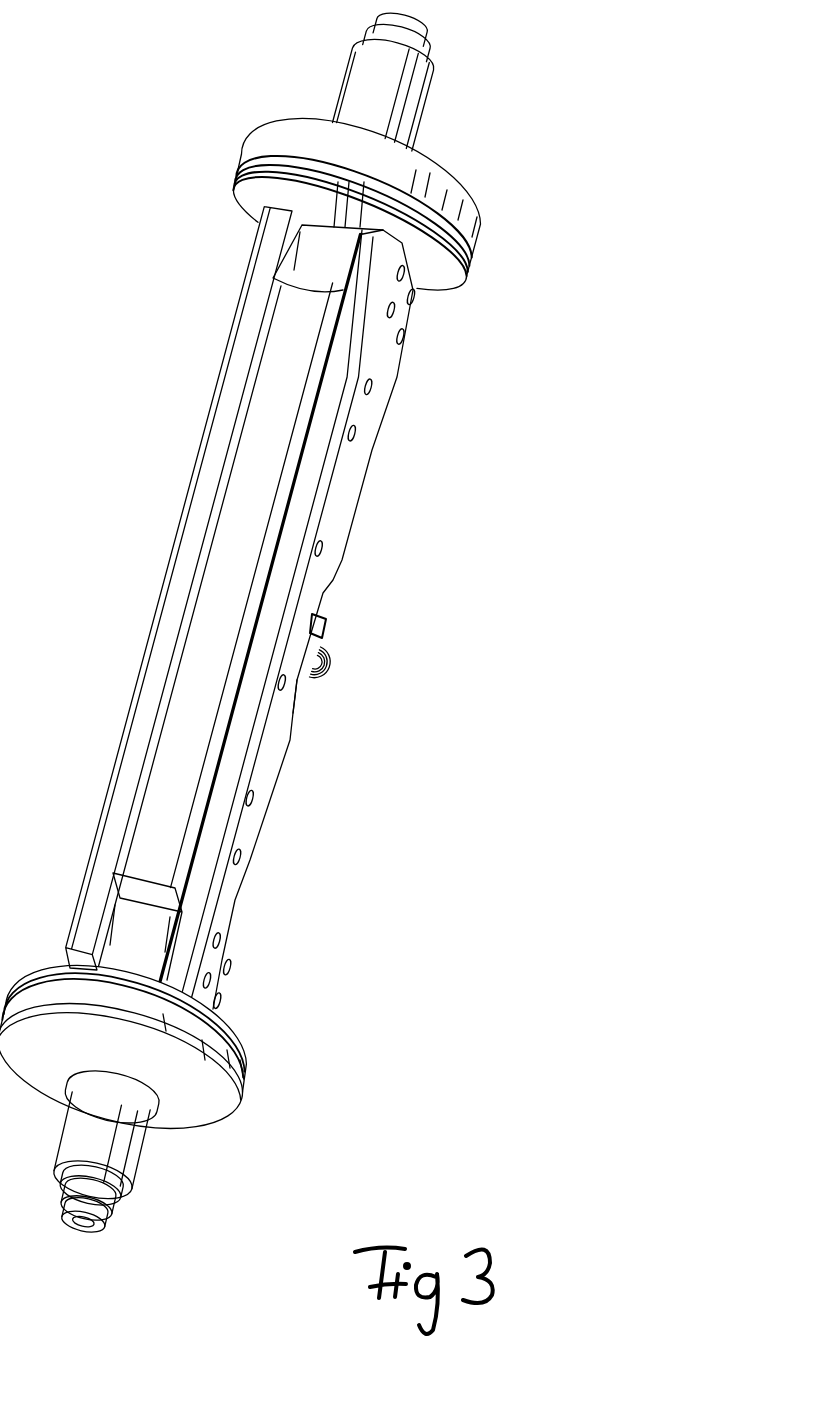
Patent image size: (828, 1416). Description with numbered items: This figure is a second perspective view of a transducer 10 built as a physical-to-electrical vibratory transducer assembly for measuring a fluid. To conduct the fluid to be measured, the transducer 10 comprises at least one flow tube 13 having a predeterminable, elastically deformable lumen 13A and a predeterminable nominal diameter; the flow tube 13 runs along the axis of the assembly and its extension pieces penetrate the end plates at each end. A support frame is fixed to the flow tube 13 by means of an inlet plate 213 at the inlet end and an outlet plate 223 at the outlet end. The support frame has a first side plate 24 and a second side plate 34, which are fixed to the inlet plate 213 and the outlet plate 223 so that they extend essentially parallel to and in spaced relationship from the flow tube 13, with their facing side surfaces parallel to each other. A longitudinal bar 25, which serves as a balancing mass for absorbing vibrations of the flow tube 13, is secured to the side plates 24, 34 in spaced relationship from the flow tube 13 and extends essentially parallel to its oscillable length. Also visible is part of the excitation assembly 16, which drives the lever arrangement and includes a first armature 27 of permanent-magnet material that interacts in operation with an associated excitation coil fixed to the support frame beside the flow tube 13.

The transducer 10 is at (297, 60).
The flow tube 13 is at (375, 198).
The lumen 13A is at (81, 1236).
The outlet plate 223 is at (347, 272).
The longitudinal bar 25 is at (307, 355).
The second side plate 34 is at (207, 473).
The first side plate 24 is at (313, 470).
The first armature 27 is at (330, 655).
The excitation assembly 16 is at (347, 678).
The inlet plate 213 is at (153, 938).